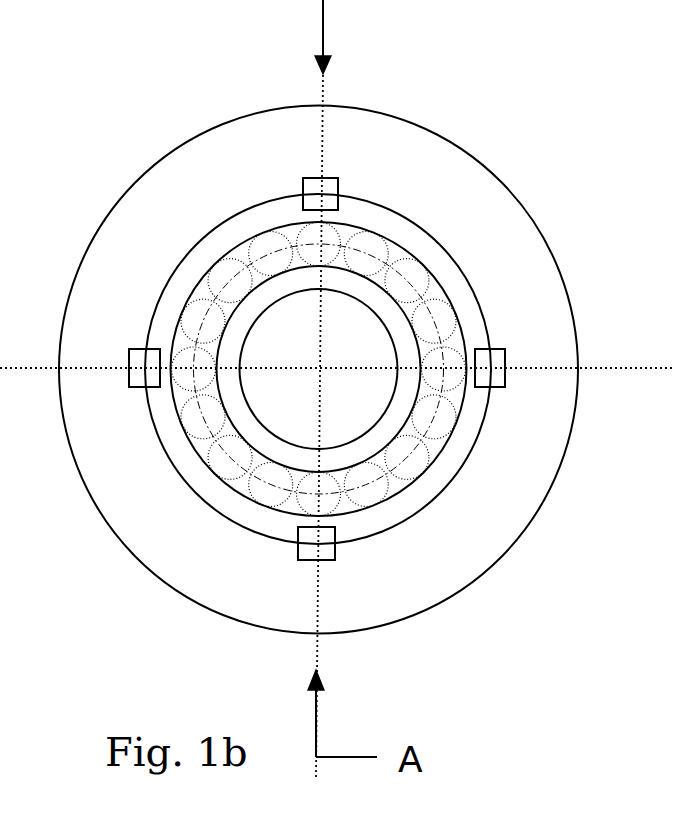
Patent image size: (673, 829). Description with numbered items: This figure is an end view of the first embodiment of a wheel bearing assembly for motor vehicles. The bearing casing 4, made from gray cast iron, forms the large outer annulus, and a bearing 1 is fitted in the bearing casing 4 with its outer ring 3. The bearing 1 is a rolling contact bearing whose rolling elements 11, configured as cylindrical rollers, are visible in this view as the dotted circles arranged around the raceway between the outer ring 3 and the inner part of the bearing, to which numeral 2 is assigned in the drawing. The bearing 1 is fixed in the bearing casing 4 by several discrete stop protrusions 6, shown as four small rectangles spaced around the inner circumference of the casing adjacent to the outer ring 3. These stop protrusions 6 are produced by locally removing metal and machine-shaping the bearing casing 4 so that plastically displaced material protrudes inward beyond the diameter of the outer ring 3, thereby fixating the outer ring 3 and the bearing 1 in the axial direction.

The bearing 1 is at (314, 377).
The inner ring 2 is at (250, 434).
The outer ring 3 is at (226, 508).
The bearing casing 4 is at (510, 512).
The stop protrusions 6 is at (338, 193).
The rolling elements 11 is at (273, 240).